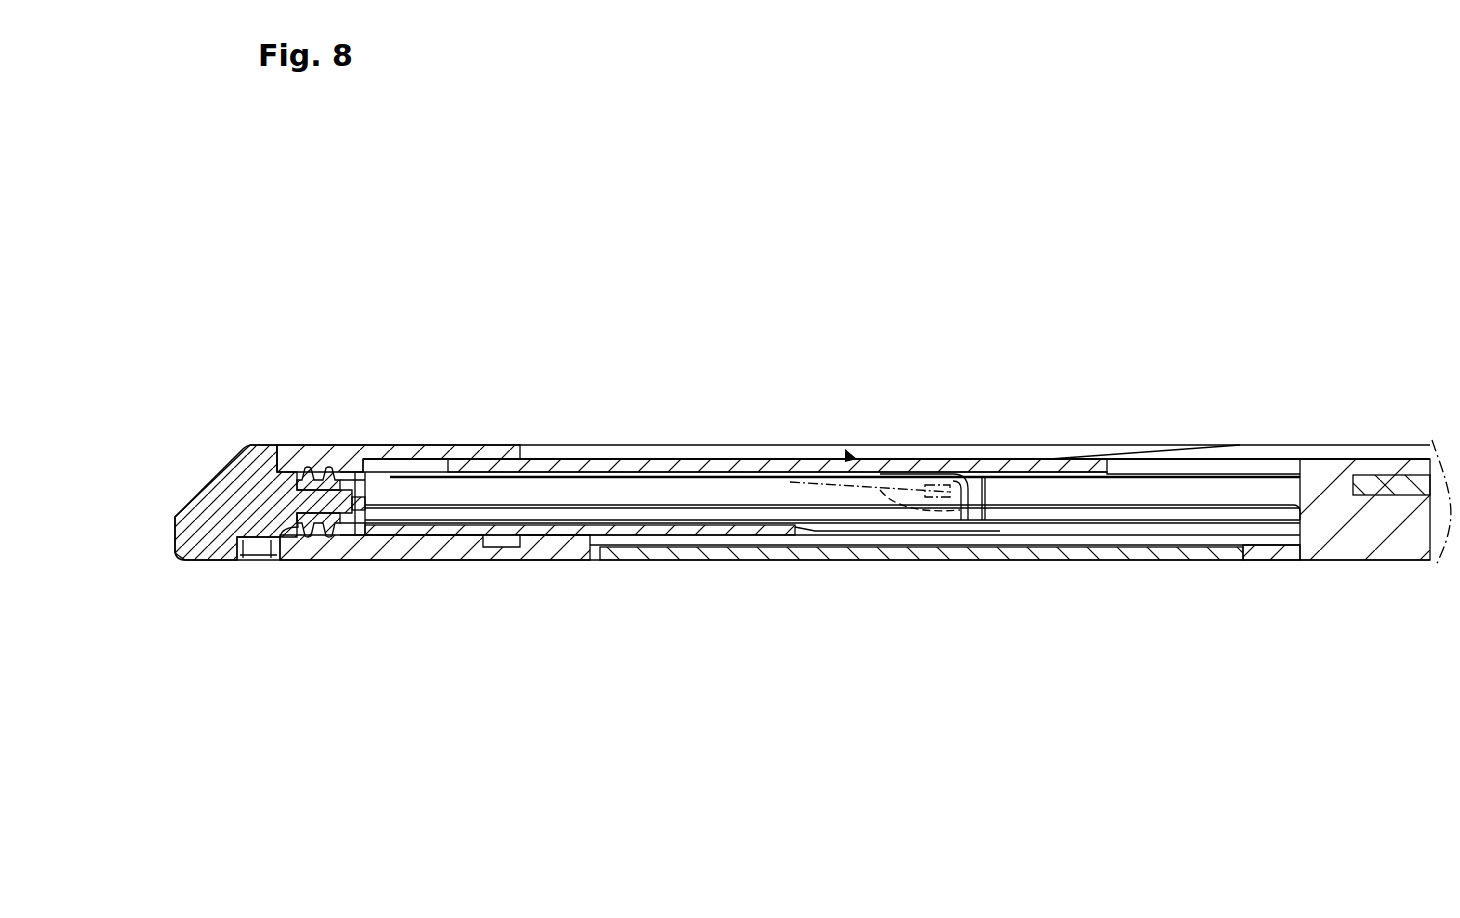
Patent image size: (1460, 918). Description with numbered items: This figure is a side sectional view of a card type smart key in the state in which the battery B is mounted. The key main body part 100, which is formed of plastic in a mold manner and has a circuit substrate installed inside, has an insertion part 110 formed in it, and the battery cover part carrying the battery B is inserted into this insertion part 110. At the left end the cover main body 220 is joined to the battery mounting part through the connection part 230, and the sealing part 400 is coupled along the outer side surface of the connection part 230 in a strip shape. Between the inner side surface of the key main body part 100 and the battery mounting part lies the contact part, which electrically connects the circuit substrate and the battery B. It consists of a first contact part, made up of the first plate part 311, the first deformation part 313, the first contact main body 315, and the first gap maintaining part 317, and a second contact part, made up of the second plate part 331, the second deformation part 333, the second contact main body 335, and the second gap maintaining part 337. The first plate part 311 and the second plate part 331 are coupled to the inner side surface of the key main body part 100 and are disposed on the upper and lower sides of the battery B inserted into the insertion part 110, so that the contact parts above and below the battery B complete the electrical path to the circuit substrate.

The key main body part 100 is at (403, 447).
The insertion part 110 is at (272, 525).
The cover main body 220 is at (233, 482).
The connection part 230 is at (318, 497).
The first plate part 311 is at (610, 463).
The first deformation part 313 is at (915, 458).
The first contact main body 315 is at (985, 520).
The first gap maintaining part 317 is at (785, 470).
The second plate part 331 is at (503, 547).
The second deformation part 333 is at (1000, 505).
The second contact main body 335 is at (1010, 535).
The second gap maintaining part 337 is at (900, 535).
The sealing part 400 is at (300, 470).
The battery B is at (1258, 490).